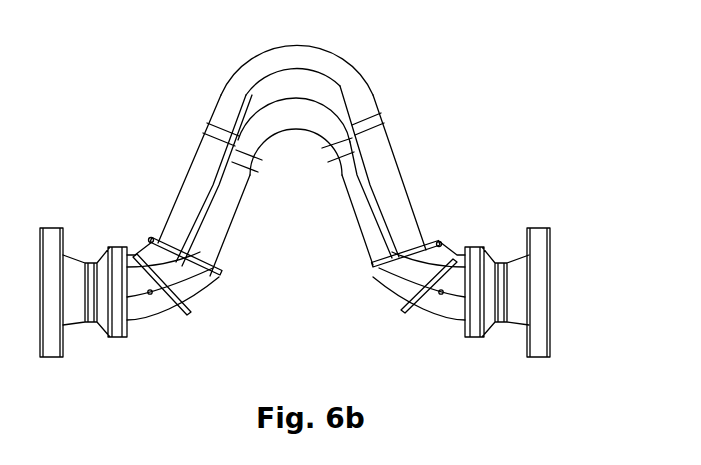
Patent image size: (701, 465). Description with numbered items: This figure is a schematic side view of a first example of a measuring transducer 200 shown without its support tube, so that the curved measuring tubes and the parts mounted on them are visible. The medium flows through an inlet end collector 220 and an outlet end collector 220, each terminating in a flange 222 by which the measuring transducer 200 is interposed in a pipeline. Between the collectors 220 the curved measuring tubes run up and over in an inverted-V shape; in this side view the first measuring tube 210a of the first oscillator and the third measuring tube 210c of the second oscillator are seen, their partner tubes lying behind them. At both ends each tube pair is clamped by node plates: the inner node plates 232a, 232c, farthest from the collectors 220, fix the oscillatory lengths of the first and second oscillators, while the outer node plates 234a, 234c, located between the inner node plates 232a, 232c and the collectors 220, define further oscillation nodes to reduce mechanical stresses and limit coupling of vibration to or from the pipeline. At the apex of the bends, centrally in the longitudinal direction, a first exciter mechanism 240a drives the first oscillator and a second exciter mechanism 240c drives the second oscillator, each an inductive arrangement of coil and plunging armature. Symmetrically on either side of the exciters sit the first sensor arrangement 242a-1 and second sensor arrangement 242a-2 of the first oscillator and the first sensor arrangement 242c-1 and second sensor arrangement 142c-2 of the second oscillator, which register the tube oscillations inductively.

The measuring transducer 200 is at (380, 64).
The first measuring tube 210a is at (272, 60).
The third measuring tube 210c is at (260, 122).
The first exciter mechanism 240a is at (294, 69).
The second exciter mechanism 240c is at (297, 127).
The first sensor arrangement 242a-1 is at (236, 140).
The second sensor arrangement 242a-2 is at (358, 137).
The first sensor arrangement 242c-1 is at (254, 172).
The second joint of inner tube 142c-2 is at (340, 171).
The inner node plate 232a is at (153, 242).
The inner node plate 232c is at (219, 270).
The outer node plate 234a is at (152, 296).
The outer node plate 234c is at (190, 309).
The collector 220 is at (118, 318).
The flange 222 is at (56, 345).